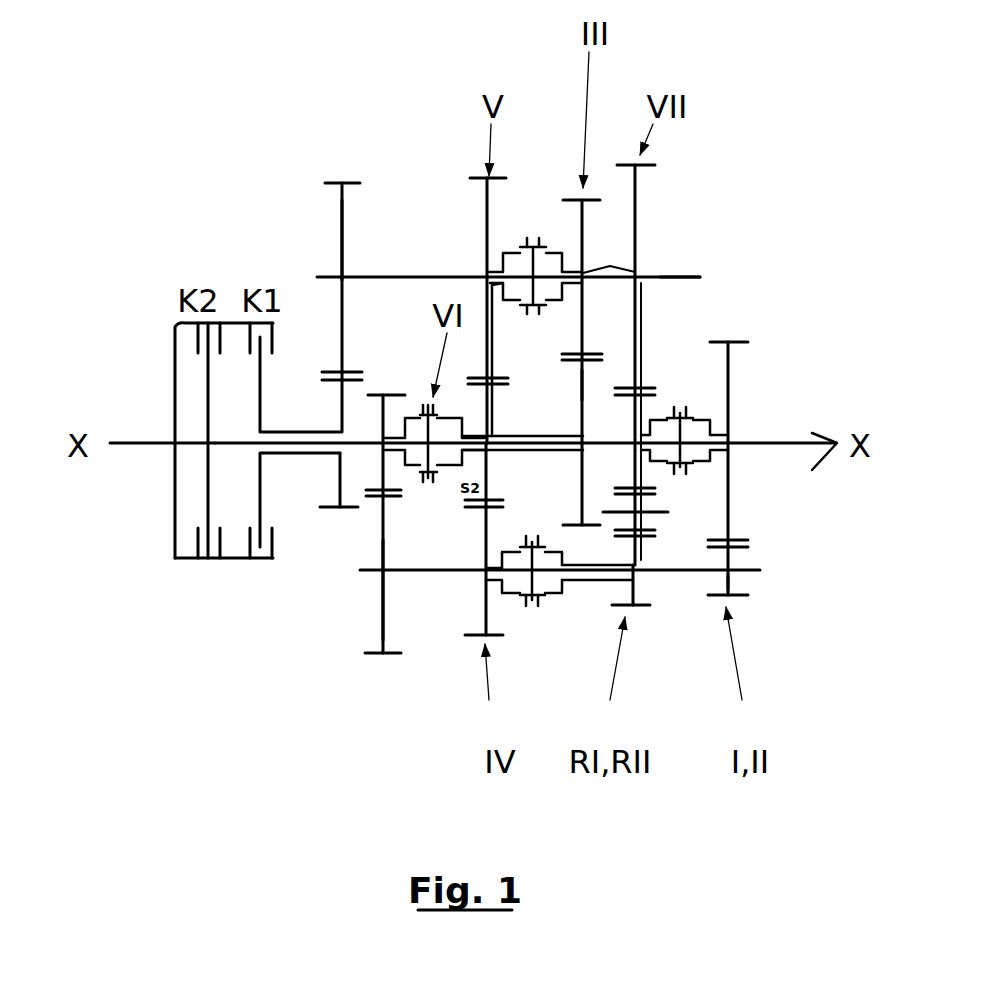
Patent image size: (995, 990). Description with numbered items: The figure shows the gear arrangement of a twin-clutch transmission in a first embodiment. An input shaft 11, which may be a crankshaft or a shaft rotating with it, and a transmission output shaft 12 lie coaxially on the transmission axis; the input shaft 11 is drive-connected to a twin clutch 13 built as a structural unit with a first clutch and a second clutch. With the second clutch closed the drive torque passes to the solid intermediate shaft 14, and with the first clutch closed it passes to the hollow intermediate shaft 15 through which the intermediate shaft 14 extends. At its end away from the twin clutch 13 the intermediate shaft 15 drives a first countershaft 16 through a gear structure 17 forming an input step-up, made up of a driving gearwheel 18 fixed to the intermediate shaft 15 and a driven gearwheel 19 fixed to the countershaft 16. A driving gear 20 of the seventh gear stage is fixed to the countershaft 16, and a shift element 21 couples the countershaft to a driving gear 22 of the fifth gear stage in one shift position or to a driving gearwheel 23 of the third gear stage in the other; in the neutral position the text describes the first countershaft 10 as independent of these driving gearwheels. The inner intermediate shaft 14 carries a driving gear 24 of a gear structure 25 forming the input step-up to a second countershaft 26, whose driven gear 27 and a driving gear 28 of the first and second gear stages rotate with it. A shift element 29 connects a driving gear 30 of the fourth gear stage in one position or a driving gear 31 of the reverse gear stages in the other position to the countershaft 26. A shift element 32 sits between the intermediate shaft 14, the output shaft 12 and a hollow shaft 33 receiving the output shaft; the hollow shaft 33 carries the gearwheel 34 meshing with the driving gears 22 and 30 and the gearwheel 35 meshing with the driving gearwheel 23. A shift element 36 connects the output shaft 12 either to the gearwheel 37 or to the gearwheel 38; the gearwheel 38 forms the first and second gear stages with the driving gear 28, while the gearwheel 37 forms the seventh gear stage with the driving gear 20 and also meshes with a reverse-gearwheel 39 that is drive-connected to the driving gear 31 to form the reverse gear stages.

The first countershaft 10 is at (700, 237).
The input shaft 11 is at (138, 444).
The transmission output shaft 12 is at (778, 438).
The twin clutch 13 is at (160, 553).
The intermediate shaft 14 is at (240, 444).
The intermediate shaft 15 is at (302, 455).
The first countershaft 16 is at (370, 276).
The gear structure 17 is at (340, 180).
The driving gearwheel 18 is at (337, 477).
The driven gearwheel 19 is at (337, 235).
The driving gear 20 is at (638, 220).
The shift element 21 is at (535, 224).
The driving gear 22 is at (486, 225).
The driving gearwheel 23 is at (585, 230).
The driving gear 24 is at (385, 410).
The gear structure 25 is at (382, 660).
The second countershaft 26 is at (760, 571).
The driven gear 27 is at (380, 617).
The driving gear 28 is at (730, 582).
The shift element 29 is at (529, 608).
The driving gear 30 is at (483, 590).
The driving gear 31 is at (627, 585).
The shift element 32 is at (432, 486).
The hollow shaft 33 is at (525, 452).
The gearwheel 34 is at (490, 413).
The gearwheel 35 is at (592, 380).
The shift element 36 is at (695, 484).
The gearwheel 37 is at (641, 473).
The gearwheel 38 is at (730, 387).
The reverse-gearwheel 39 is at (641, 448).